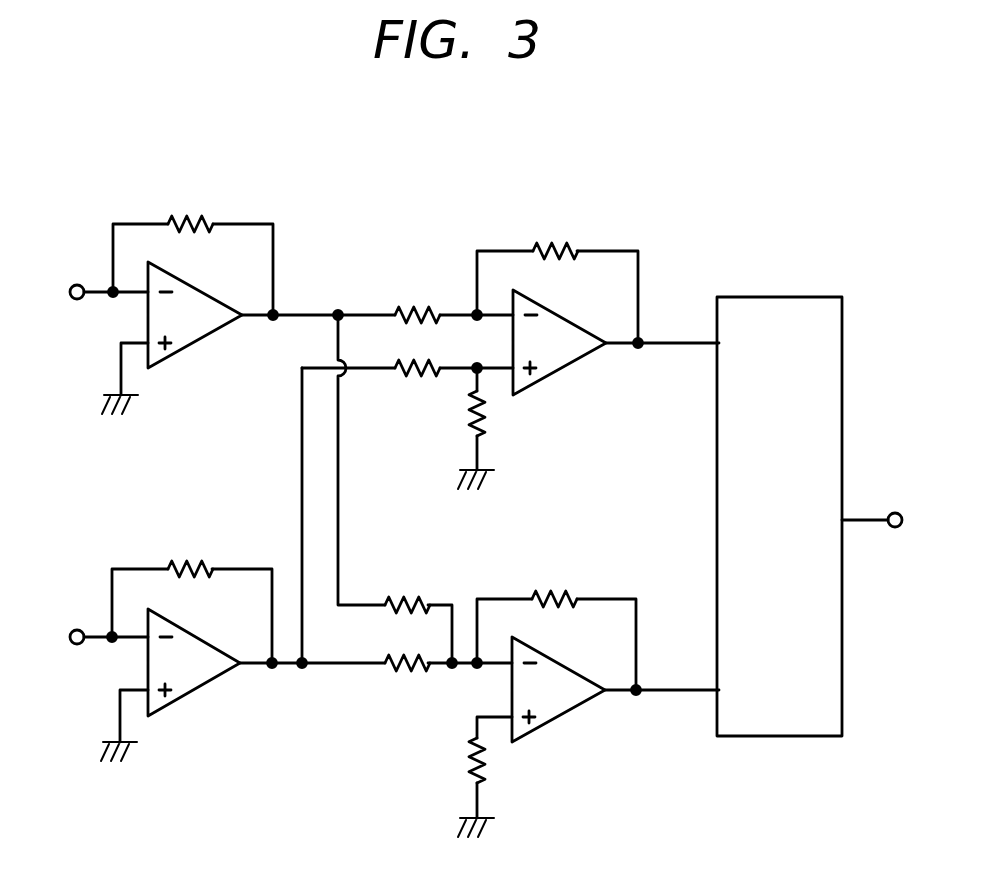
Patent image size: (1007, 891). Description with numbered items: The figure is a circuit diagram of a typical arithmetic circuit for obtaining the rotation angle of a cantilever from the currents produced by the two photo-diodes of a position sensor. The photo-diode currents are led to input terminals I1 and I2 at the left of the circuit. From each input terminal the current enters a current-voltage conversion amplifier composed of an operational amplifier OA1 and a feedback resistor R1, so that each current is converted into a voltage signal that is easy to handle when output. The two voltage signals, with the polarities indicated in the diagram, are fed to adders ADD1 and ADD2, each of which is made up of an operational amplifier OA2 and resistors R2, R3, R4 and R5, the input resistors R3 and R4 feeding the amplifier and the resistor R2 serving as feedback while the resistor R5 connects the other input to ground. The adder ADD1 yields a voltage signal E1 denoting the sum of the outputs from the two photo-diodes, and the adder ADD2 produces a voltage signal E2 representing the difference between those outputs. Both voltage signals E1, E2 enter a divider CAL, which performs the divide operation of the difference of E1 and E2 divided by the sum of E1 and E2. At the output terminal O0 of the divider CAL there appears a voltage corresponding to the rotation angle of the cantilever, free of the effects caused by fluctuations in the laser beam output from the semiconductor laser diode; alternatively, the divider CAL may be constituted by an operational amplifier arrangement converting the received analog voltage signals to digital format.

The input terminal I1 is at (77, 284).
The input terminal I2 is at (77, 630).
The operational amplifier OA1 is at (205, 335).
The operational amplifier OA2 is at (572, 365).
The resistor R1 is at (185, 216).
The resistor R2 is at (548, 245).
The resistor R3 is at (415, 307).
The resistor R4 is at (418, 377).
The resistor R5 is at (485, 415).
The voltage signal E1 is at (662, 330).
The voltage signal E2 is at (662, 677).
The adder ADD1 is at (662, 482).
The adder ADD2 is at (660, 832).
The divider CAL is at (782, 297).
The output terminal O0 is at (895, 512).